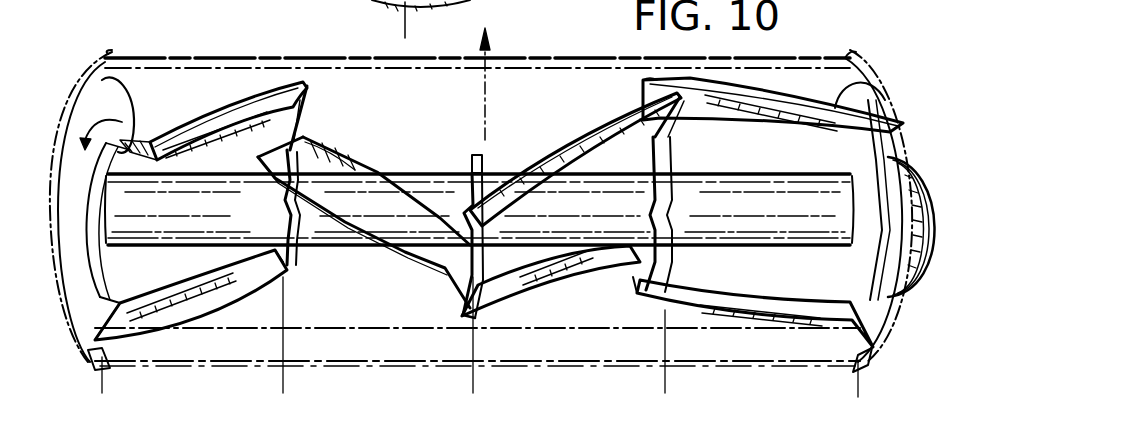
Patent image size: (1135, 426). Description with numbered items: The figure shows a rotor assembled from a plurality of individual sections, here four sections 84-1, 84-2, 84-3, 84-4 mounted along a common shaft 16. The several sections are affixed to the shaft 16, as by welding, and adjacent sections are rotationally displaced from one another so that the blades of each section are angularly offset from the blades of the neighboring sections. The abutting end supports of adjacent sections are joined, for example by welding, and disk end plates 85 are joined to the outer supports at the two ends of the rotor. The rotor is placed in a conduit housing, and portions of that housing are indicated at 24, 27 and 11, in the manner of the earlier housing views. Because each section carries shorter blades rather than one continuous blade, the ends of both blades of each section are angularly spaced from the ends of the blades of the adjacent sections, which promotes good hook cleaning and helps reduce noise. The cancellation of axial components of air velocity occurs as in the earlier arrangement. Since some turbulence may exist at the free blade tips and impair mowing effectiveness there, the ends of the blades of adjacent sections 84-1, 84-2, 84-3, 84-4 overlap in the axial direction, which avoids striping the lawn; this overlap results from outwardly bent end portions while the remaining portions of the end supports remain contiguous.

The housing portion 11 is at (82, 352).
The shaft 16 is at (413, 180).
The housing portion 24 is at (540, 57).
The housing portion 27 is at (410, 364).
The first rotor section 84-1 is at (201, 237).
The second rotor section 84-2 is at (370, 265).
The third rotor section 84-3 is at (573, 243).
The fourth rotor section 84-4 is at (768, 218).
The disk end plate 85 is at (117, 112).